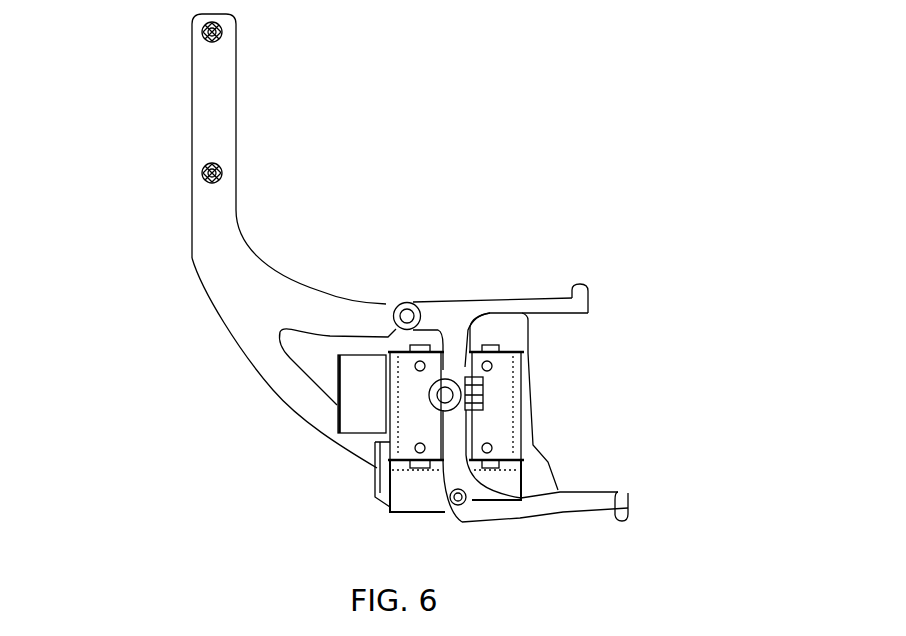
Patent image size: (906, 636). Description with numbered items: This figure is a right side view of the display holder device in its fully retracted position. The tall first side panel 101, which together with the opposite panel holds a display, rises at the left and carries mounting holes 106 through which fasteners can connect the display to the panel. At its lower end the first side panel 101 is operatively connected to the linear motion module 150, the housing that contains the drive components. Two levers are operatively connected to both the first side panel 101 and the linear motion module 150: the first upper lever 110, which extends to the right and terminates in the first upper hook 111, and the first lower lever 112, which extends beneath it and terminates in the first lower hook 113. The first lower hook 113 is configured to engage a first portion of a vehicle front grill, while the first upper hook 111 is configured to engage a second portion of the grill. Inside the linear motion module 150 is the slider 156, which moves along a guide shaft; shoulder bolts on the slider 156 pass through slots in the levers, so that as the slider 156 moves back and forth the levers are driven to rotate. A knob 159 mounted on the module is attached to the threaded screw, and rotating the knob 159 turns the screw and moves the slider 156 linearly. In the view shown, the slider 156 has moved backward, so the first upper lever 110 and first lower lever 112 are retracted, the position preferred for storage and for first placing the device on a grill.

The first side panel 101 is at (248, 298).
The mounting holes 106 is at (222, 31).
The first upper lever 110 is at (458, 318).
The first upper hook 111 is at (577, 305).
The knob 159 is at (363, 398).
The linear motion module 150 is at (400, 433).
The slider 156 is at (473, 390).
The first lower lever 112 is at (522, 506).
The first lower hook 113 is at (625, 497).